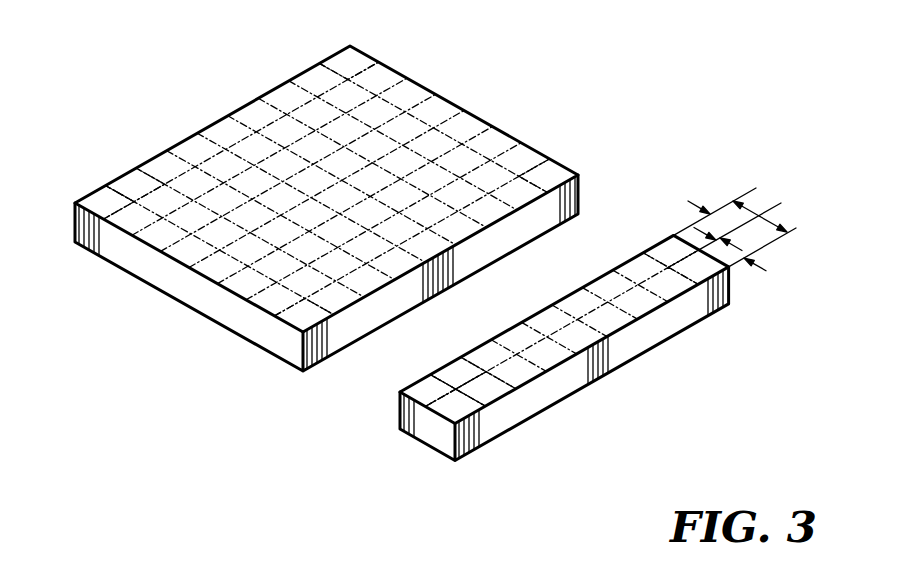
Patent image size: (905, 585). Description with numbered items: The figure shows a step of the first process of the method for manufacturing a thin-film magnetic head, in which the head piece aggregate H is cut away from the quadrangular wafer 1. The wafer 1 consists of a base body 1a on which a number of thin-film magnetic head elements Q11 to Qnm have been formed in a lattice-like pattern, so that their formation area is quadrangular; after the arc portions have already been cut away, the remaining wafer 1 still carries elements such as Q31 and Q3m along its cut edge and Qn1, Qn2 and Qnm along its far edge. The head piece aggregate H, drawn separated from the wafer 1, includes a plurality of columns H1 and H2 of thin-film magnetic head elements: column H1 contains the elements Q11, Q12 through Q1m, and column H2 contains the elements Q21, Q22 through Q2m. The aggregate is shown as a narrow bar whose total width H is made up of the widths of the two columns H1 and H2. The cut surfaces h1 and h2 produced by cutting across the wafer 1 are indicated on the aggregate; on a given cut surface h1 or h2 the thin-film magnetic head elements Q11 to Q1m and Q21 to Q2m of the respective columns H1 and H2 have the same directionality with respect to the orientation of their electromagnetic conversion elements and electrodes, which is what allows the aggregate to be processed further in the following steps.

The wafer 1 is at (496, 87).
The base body 1a is at (153, 275).
The thin-film magnetic head element Qnm is at (346, 62).
The thin-film magnetic head element Qn2 is at (133, 184).
The thin-film magnetic head element Qn1 is at (98, 213).
The thin-film magnetic head element Q3m is at (558, 176).
The thin-film magnetic head element Q31 is at (293, 322).
The thin-film magnetic head element Q22 is at (463, 368).
The thin-film magnetic head element Q21 is at (423, 392).
The thin-film magnetic head element Q2m is at (668, 253).
The thin-film magnetic head element Q11 is at (472, 422).
The thin-film magnetic head element Q12 is at (507, 392).
The thin-film magnetic head element Q1m is at (710, 286).
The cut surface h1 is at (596, 346).
The cut surface h2 is at (510, 328).
The head piece aggregate H is at (753, 218).
The column H1 is at (731, 254).
The column H2 is at (733, 226).